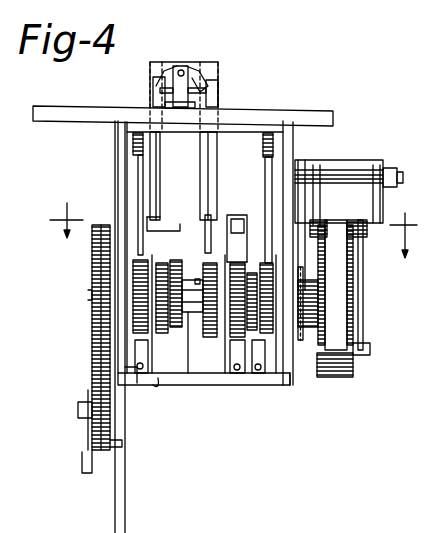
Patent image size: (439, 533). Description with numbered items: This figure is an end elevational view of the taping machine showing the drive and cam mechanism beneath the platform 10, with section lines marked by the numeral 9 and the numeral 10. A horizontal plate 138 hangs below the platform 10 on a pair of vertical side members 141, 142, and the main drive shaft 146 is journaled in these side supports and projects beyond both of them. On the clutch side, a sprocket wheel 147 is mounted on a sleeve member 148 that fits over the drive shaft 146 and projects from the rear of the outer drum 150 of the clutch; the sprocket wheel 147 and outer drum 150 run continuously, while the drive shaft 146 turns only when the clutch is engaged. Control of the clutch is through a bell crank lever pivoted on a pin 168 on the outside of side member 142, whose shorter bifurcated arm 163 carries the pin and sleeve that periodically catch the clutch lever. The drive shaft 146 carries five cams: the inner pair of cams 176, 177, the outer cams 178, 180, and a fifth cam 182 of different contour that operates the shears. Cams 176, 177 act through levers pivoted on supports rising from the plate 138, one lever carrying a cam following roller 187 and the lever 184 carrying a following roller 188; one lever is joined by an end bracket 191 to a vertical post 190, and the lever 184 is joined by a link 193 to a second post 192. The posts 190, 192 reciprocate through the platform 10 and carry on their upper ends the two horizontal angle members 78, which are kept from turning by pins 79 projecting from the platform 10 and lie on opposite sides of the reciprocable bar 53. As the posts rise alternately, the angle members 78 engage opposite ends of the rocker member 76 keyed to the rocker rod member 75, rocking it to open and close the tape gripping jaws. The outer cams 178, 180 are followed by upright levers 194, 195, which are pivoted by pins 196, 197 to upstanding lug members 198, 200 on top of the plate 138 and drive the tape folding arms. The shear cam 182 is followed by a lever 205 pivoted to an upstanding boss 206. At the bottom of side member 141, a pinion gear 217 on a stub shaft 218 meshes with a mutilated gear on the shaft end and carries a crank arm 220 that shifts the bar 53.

The section line 9- 9 is at (228, 228).
The platform 10 is at (146, 67).
The reciprocable bar 53 is at (205, 80).
The rocker rod member 75 is at (181, 66).
The rocker member 76 is at (198, 66).
The horizontal angle members 78 is at (153, 88).
The pins 79 is at (156, 100).
The horizontal plate 138 is at (213, 372).
The vertical side member 141 is at (118, 136).
The vertical side member 142 is at (293, 142).
The main drive shaft 146 is at (90, 296).
The sprocket wheel 147 is at (280, 385).
The sleeve member 148 is at (310, 330).
The outer drum 150 is at (355, 304).
The bifurcated arm 163 is at (372, 201).
The pin 168 is at (397, 178).
The cam 176 is at (228, 336).
The cam 177 is at (207, 357).
The cam 178 is at (243, 260).
The cam 180 is at (108, 262).
The fifth cam 182 is at (240, 256).
The lever 184 is at (205, 230).
The cam following roller 187 is at (204, 278).
The following roller 188 is at (191, 282).
The vertical post 190 is at (160, 148).
The end bracket 191 is at (160, 224).
The second post 192 is at (217, 148).
The link 193 is at (208, 222).
The lever 194 is at (128, 170).
The upright lever 195 is at (265, 163).
The pin 196 is at (272, 385).
The pin 197 is at (160, 384).
The upstanding ear or lug member 198 is at (255, 385).
The upstanding ear or lug member 200 is at (136, 364).
The lever 205 is at (222, 380).
The upstanding lug or boss 206 is at (243, 372).
The pinion gear 217 is at (100, 450).
The stub shaft 218 is at (78, 410).
The crank arm 220 is at (81, 465).